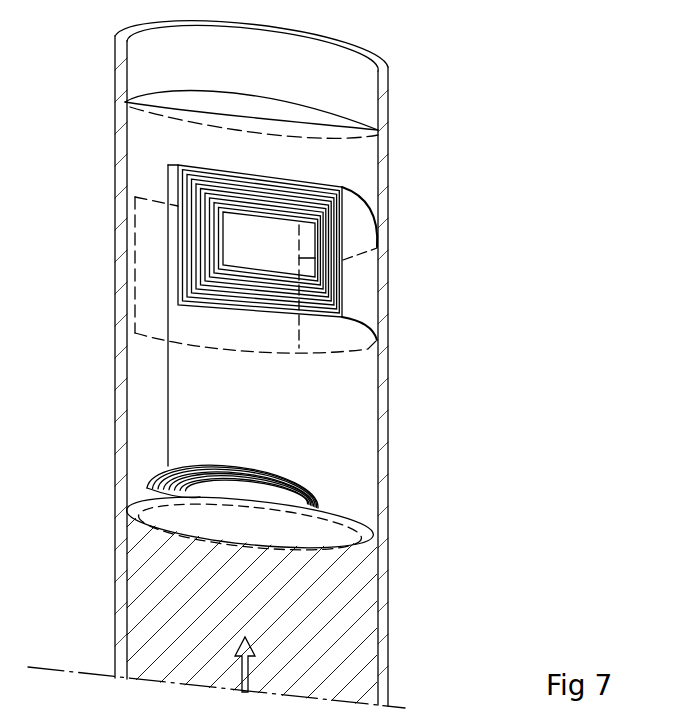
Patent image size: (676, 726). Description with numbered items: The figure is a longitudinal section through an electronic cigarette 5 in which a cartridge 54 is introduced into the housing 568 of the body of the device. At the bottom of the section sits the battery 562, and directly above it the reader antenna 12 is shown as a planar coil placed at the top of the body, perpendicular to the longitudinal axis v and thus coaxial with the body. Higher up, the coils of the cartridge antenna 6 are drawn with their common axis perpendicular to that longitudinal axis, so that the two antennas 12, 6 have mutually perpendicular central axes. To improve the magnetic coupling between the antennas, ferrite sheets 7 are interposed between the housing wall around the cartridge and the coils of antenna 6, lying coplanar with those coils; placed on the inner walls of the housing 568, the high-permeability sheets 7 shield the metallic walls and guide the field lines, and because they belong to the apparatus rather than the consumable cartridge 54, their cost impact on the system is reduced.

The electronic cigarette 5 is at (487, 320).
The cartridge 54 is at (158, 142).
The housing 568 is at (114, 291).
The ferrite sheets 7 is at (207, 377).
The antenna 6 is at (156, 226).
The antenna 12 is at (157, 468).
The battery 562 is at (182, 601).